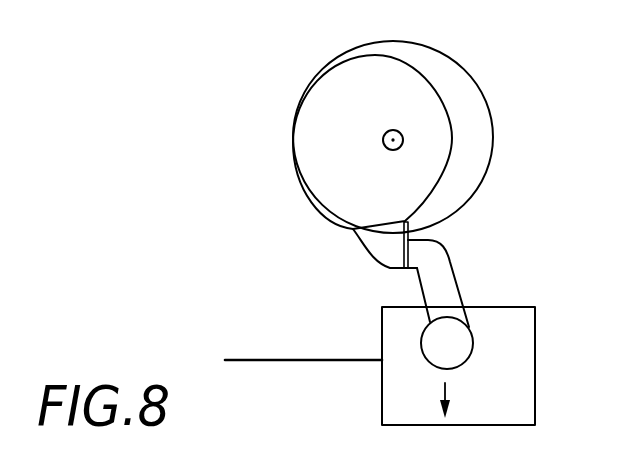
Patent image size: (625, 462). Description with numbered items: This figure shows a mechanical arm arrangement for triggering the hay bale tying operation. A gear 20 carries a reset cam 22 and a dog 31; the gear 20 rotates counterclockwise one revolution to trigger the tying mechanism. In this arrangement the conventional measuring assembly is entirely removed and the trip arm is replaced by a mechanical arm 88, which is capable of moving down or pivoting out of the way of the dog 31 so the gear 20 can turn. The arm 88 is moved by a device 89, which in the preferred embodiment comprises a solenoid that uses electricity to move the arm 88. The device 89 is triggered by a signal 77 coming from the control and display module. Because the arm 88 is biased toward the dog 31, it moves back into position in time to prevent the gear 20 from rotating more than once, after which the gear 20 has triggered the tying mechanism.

The gear 20 is at (483, 138).
The reset cam 22 is at (340, 145).
The dog 31 is at (380, 262).
The signal 77 is at (300, 360).
The mechanical arm 88 is at (453, 342).
The device for moving arm 89 is at (402, 389).